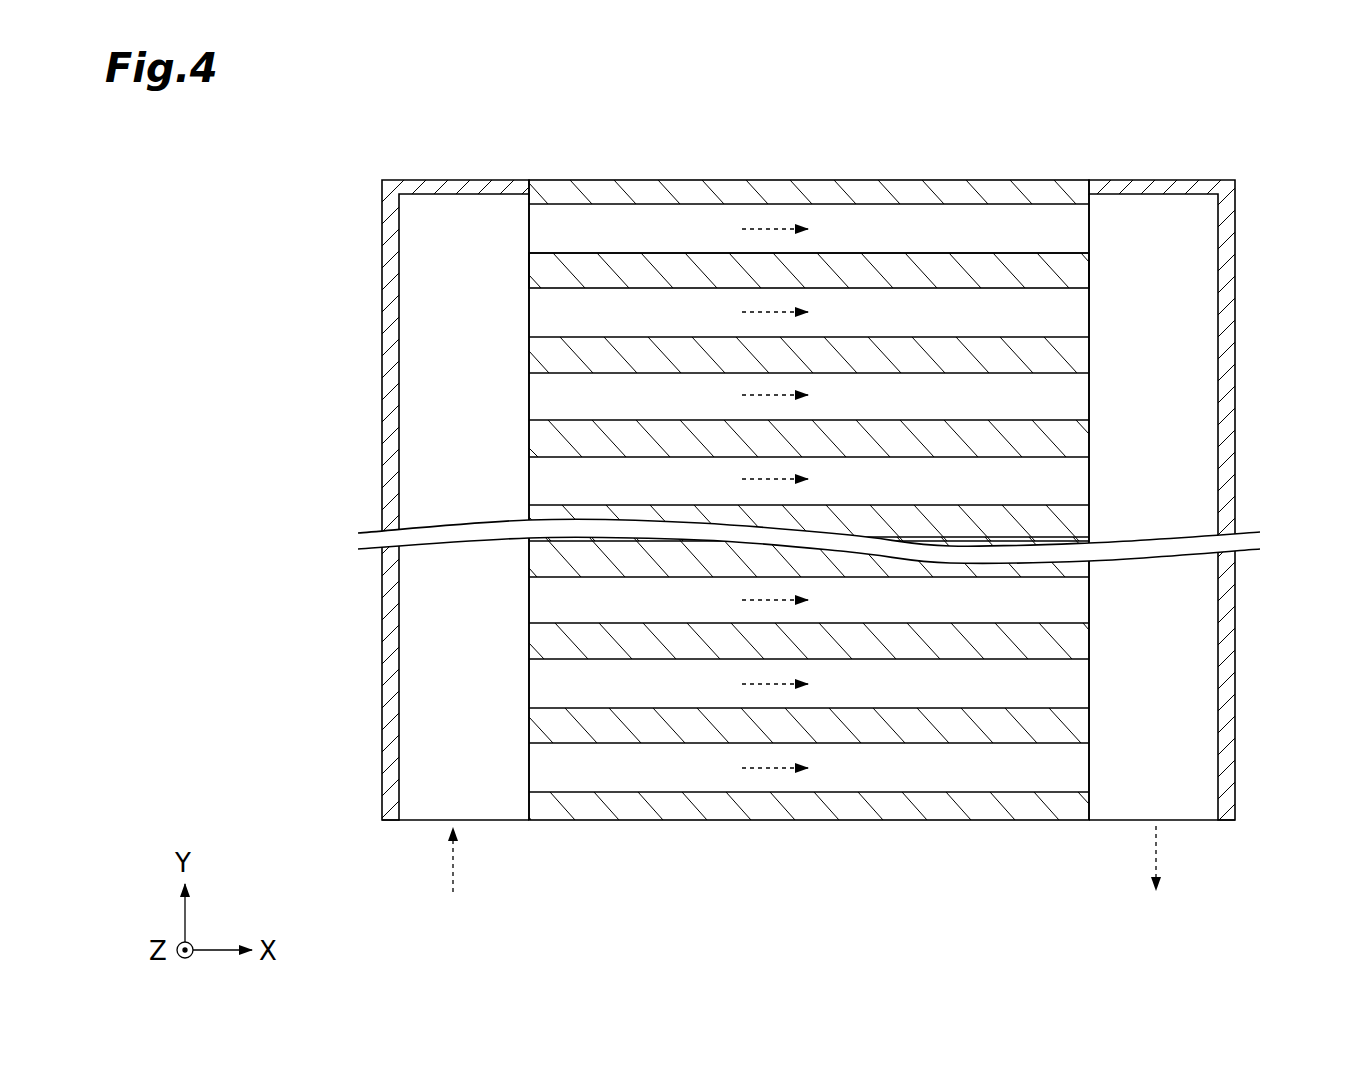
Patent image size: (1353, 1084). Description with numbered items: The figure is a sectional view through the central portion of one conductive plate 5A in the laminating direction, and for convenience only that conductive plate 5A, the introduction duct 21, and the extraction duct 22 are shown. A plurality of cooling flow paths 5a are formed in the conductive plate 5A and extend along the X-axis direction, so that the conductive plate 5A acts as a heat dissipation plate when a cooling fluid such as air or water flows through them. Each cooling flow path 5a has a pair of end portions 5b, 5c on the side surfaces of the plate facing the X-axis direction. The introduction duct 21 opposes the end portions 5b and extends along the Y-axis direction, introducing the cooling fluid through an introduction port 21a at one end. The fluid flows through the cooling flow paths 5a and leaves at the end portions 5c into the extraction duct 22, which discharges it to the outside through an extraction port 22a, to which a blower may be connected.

The introduction duct 21 is at (382, 350).
The extraction duct 22 is at (1235, 350).
The conductive plate 5A is at (815, 193).
The cooling flow path 5a is at (922, 298).
The end portion 5b is at (529, 310).
The end portion 5c is at (1089, 310).
The introduction port 21a is at (399, 812).
The extraction port 22a is at (1218, 808).